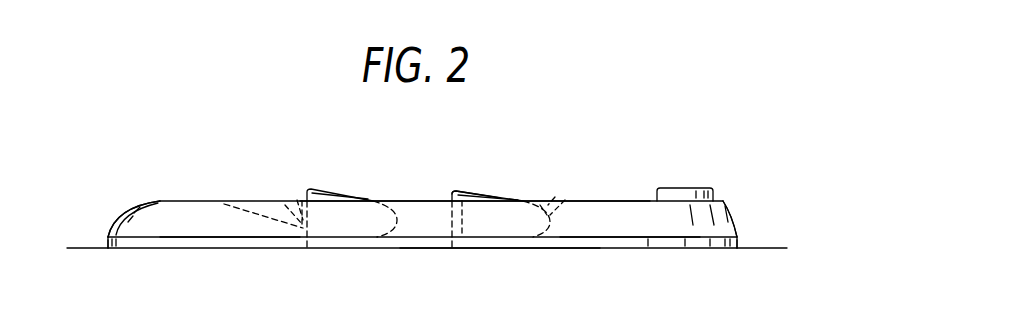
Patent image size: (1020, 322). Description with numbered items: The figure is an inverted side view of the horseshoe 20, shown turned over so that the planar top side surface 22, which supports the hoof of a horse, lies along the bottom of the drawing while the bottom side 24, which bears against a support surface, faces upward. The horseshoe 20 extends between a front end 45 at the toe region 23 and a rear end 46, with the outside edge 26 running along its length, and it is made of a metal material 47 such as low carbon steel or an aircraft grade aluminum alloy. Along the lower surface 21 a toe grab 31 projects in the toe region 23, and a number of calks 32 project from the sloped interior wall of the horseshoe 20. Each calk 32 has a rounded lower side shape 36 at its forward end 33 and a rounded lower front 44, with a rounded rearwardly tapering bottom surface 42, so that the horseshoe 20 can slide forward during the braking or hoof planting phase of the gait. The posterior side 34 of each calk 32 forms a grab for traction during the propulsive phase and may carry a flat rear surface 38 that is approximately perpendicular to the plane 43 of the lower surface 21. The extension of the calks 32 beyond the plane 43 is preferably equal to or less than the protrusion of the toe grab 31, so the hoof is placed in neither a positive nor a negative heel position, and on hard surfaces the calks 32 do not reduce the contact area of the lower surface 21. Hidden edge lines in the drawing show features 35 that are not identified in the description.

The horseshoe 20 is at (639, 107).
The lower surface 21 is at (622, 201).
The planar top side surface 22 is at (518, 248).
The toe region 23 is at (735, 212).
The bottom side 24 is at (188, 200).
The outside edge 26 is at (600, 248).
The toe grab 31 is at (683, 188).
The calks 32 is at (333, 192).
The forward ends 33 is at (550, 215).
The posterior sides 34 is at (222, 201).
The hidden edge 35 is at (300, 222).
The rounded lower side shape 36 is at (547, 215).
The flat rear surface 38 is at (297, 200).
The rounded rearwardly tapering bottom surface 42 is at (492, 193).
The plane 43 is at (90, 248).
The rounded lower front 44 is at (548, 203).
The front end 45 is at (737, 248).
The rear end 46 is at (110, 248).
The metal material 47 is at (228, 225).